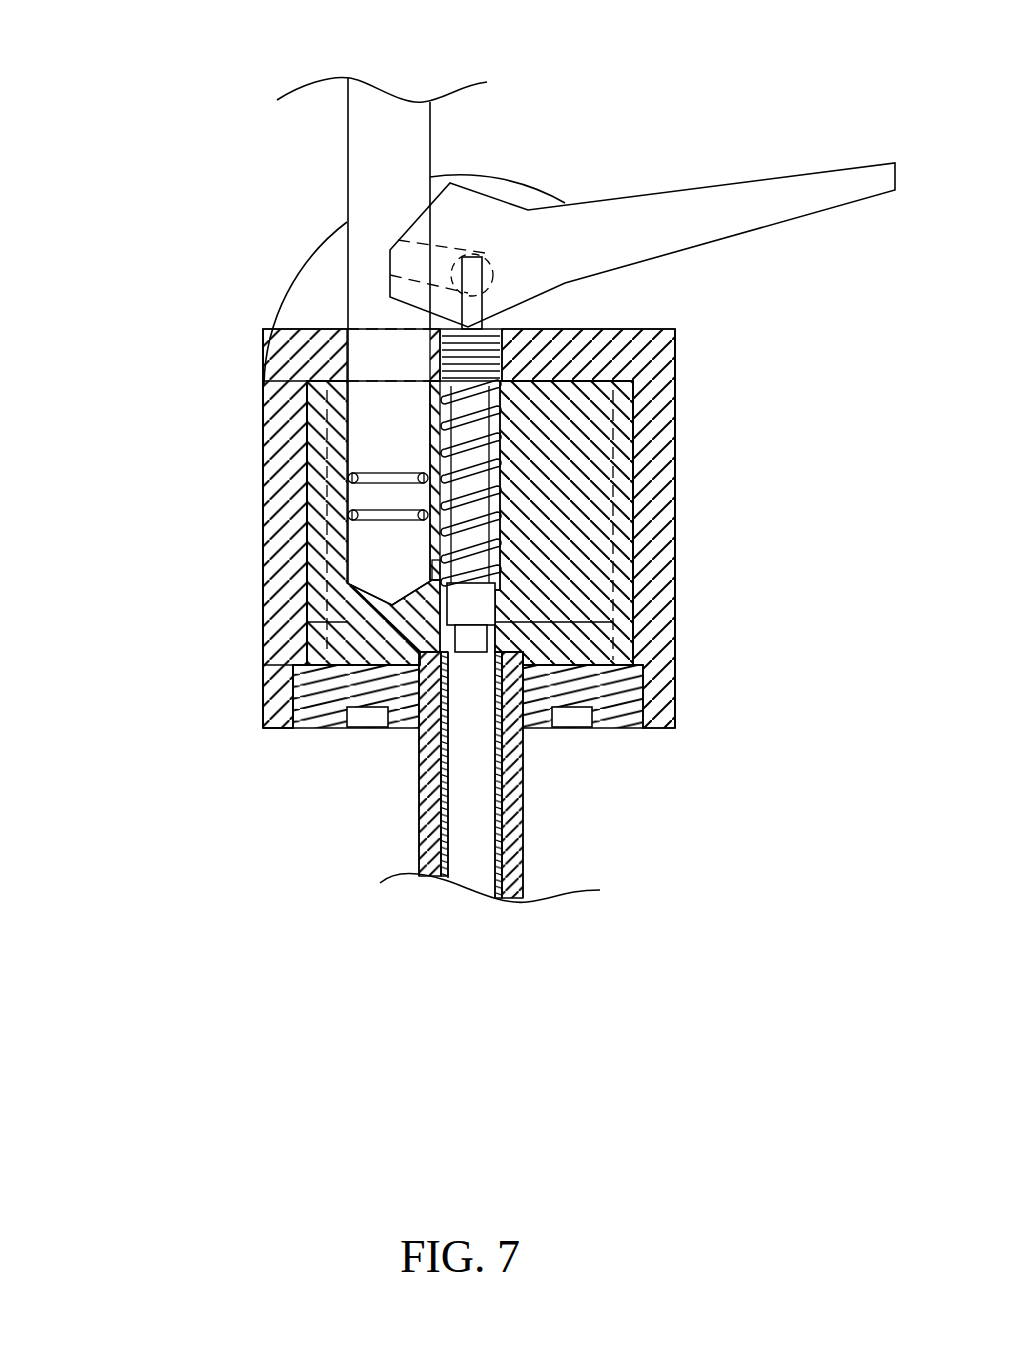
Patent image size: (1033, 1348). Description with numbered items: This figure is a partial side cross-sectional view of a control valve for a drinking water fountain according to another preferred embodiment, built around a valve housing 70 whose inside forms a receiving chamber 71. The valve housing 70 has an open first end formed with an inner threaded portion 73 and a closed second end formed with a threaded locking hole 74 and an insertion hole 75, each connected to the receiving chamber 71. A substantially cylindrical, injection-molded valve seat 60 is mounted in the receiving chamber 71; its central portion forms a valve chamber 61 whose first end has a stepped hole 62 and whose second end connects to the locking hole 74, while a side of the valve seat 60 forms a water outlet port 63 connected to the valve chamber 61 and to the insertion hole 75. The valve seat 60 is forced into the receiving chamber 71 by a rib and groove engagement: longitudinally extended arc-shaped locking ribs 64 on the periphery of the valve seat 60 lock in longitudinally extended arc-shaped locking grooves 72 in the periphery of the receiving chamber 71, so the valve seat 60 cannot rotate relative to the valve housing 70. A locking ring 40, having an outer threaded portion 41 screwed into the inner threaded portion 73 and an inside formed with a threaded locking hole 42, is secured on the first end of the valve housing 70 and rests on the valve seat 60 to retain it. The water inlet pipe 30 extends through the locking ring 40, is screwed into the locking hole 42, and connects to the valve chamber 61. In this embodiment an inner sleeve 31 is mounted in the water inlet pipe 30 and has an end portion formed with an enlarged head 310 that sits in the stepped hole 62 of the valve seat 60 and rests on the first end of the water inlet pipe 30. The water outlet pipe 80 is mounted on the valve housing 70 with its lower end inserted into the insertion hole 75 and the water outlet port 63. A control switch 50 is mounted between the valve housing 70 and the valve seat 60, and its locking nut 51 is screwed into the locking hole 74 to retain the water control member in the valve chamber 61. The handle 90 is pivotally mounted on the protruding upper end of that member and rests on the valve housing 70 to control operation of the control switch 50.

The water inlet pipe 30 is at (360, 802).
The inner sleeve 31 is at (450, 822).
The enlarged head 310 is at (308, 632).
The locking ring 40 is at (472, 748).
The outer threaded portion 41 is at (345, 728).
The threaded locking hole 42 is at (525, 725).
The control switch 50 is at (498, 540).
The locking nut 51 is at (440, 350).
The valve seat 60 is at (485, 551).
The valve chamber 61 is at (508, 476).
The stepped hole 62 is at (600, 633).
The water outlet port 63 is at (355, 562).
The locking ribs 64 is at (640, 575).
The valve housing 70 is at (441, 502).
The receiving chamber 71 is at (567, 382).
The locking grooves 72 is at (648, 408).
The inner threaded portion 73 is at (292, 688).
The threaded locking hole 74 is at (558, 329).
The insertion hole 75 is at (338, 354).
The water outlet pipe 80 is at (355, 167).
The handle 90 is at (662, 186).